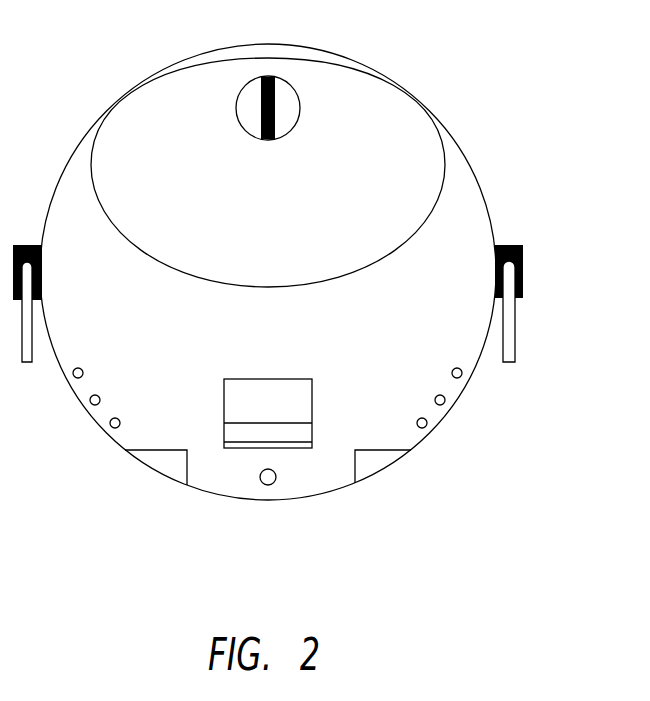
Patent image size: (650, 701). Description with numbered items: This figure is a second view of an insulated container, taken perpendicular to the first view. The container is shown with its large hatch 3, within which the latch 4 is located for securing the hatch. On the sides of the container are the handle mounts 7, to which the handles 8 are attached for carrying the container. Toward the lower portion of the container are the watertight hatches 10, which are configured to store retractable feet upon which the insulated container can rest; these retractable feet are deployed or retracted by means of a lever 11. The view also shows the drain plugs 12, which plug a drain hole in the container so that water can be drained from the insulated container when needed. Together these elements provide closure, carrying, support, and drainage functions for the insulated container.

The large hatch 3 is at (407, 144).
The latch 4 is at (284, 107).
The handle mount 7 is at (522, 247).
The handle 8 is at (510, 335).
The watertight hatch 10 is at (166, 467).
The lever 11 is at (237, 435).
The drain plug 12 is at (268, 485).